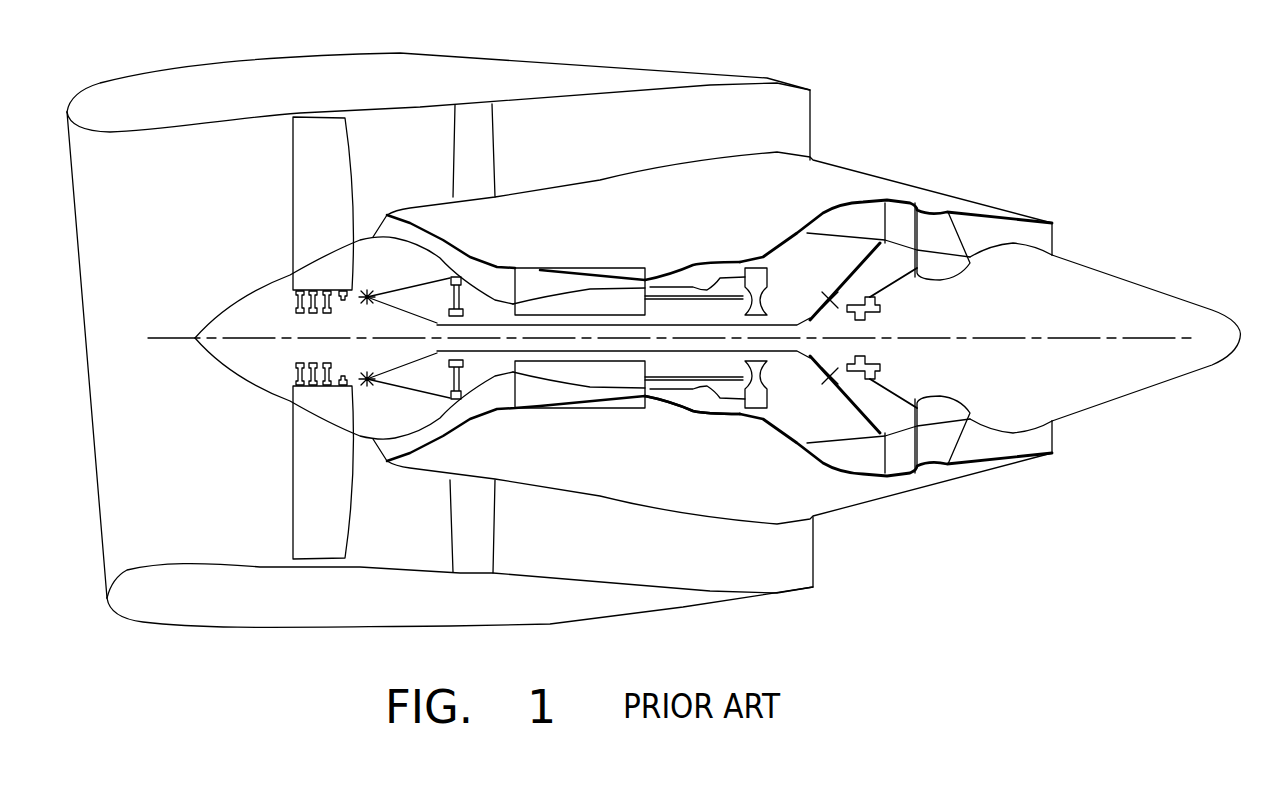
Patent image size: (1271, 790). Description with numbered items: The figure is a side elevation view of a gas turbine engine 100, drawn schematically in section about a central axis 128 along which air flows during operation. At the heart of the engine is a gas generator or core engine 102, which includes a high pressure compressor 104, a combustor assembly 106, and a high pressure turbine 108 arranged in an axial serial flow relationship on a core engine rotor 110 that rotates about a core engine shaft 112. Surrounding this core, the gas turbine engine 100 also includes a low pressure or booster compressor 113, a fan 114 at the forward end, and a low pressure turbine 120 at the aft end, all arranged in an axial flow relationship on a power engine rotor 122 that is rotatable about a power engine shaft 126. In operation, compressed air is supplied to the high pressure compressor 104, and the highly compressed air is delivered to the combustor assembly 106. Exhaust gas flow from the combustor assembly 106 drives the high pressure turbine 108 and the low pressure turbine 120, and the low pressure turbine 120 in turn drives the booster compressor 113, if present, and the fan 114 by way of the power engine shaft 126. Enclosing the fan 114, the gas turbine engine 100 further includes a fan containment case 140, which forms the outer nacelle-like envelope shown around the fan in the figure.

The gas turbine engine 100 is at (770, 70).
The core engine 102 is at (661, 437).
The high pressure compressor 104 is at (540, 283).
The combustor assembly 106 is at (713, 277).
The high pressure turbine 108 is at (752, 418).
The core engine rotor 110 is at (837, 262).
The core engine shaft 112 is at (680, 300).
The booster compressor 113 is at (407, 230).
The fan 114 is at (302, 494).
The low pressure turbine 120 is at (845, 220).
The power engine rotor 122 is at (390, 306).
The power engine shaft 126 is at (560, 382).
The central axis 128 is at (955, 340).
The fan containment case 140 is at (330, 75).